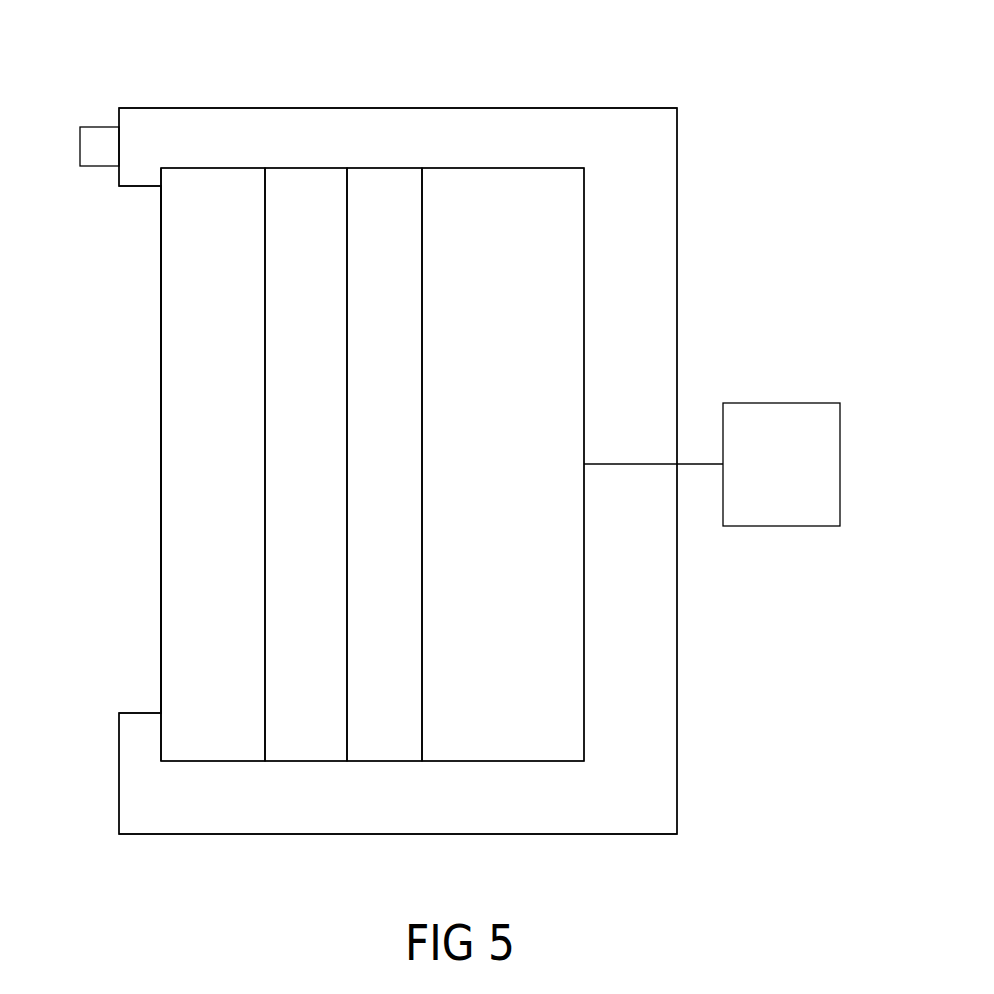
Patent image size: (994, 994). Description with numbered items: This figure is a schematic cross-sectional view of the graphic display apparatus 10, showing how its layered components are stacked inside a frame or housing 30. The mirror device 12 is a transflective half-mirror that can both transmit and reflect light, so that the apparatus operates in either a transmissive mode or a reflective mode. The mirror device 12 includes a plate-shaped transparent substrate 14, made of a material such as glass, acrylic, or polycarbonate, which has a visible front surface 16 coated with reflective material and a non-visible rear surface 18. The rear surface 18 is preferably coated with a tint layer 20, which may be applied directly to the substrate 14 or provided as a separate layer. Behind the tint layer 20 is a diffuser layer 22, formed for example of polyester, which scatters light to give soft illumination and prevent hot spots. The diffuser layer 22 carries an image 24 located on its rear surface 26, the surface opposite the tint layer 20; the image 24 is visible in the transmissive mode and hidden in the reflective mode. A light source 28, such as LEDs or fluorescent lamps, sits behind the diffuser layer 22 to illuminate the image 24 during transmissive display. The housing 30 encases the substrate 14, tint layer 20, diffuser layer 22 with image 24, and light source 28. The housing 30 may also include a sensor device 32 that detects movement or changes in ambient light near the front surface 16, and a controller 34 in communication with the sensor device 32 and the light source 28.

The graphic display apparatus 10 is at (741, 86).
The mirror device 12 is at (152, 458).
The transparent substrate 14 is at (193, 307).
The front surface 16 is at (157, 613).
The rear surface 18 is at (265, 748).
The tint layer 20 is at (303, 190).
The diffuser layer 22 is at (389, 730).
The image 24 is at (423, 533).
The rear surface of diffuser layer 26 is at (422, 743).
The light source 28 is at (506, 310).
The housing 30 is at (431, 127).
The sensor device 32 is at (100, 126).
The controller 34 is at (783, 526).